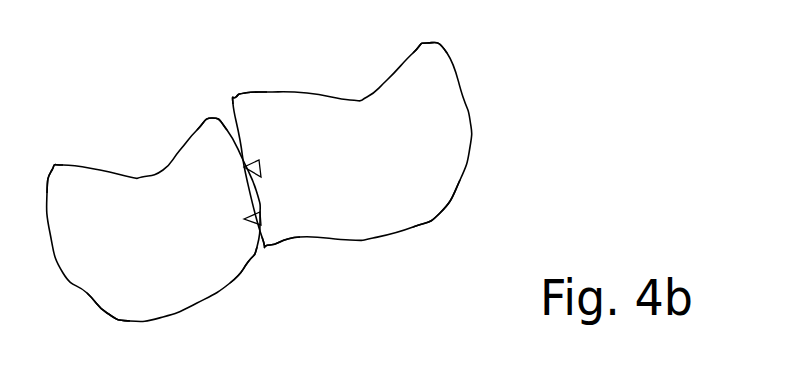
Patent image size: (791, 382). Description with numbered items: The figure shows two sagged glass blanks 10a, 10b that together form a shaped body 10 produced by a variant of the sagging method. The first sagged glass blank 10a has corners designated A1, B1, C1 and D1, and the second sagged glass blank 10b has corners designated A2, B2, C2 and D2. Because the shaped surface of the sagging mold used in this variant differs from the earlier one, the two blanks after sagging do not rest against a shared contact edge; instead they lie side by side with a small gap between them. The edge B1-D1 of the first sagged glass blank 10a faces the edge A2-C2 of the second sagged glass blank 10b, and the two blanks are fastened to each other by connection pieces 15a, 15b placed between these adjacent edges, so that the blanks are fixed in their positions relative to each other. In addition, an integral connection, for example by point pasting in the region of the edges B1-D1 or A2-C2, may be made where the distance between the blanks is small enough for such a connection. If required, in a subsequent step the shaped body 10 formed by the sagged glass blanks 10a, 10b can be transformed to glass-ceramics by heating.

The shaped body 10 is at (200, 102).
The sagged glass blank 10a is at (167, 290).
The sagged glass blank 10b is at (410, 210).
The connection piece 15a is at (243, 168).
The connection piece 15b is at (243, 218).
The corner of first glass blank A1 is at (65, 184).
The corner of first glass blank B1 is at (212, 138).
The corner of first glass blank C1 is at (108, 300).
The corner of first glass blank D1 is at (238, 259).
The corner of second glass blank A2 is at (254, 111).
The corner of second glass blank B2 is at (428, 64).
The corner of second glass blank C2 is at (285, 227).
The corner of second glass blank D2 is at (436, 192).